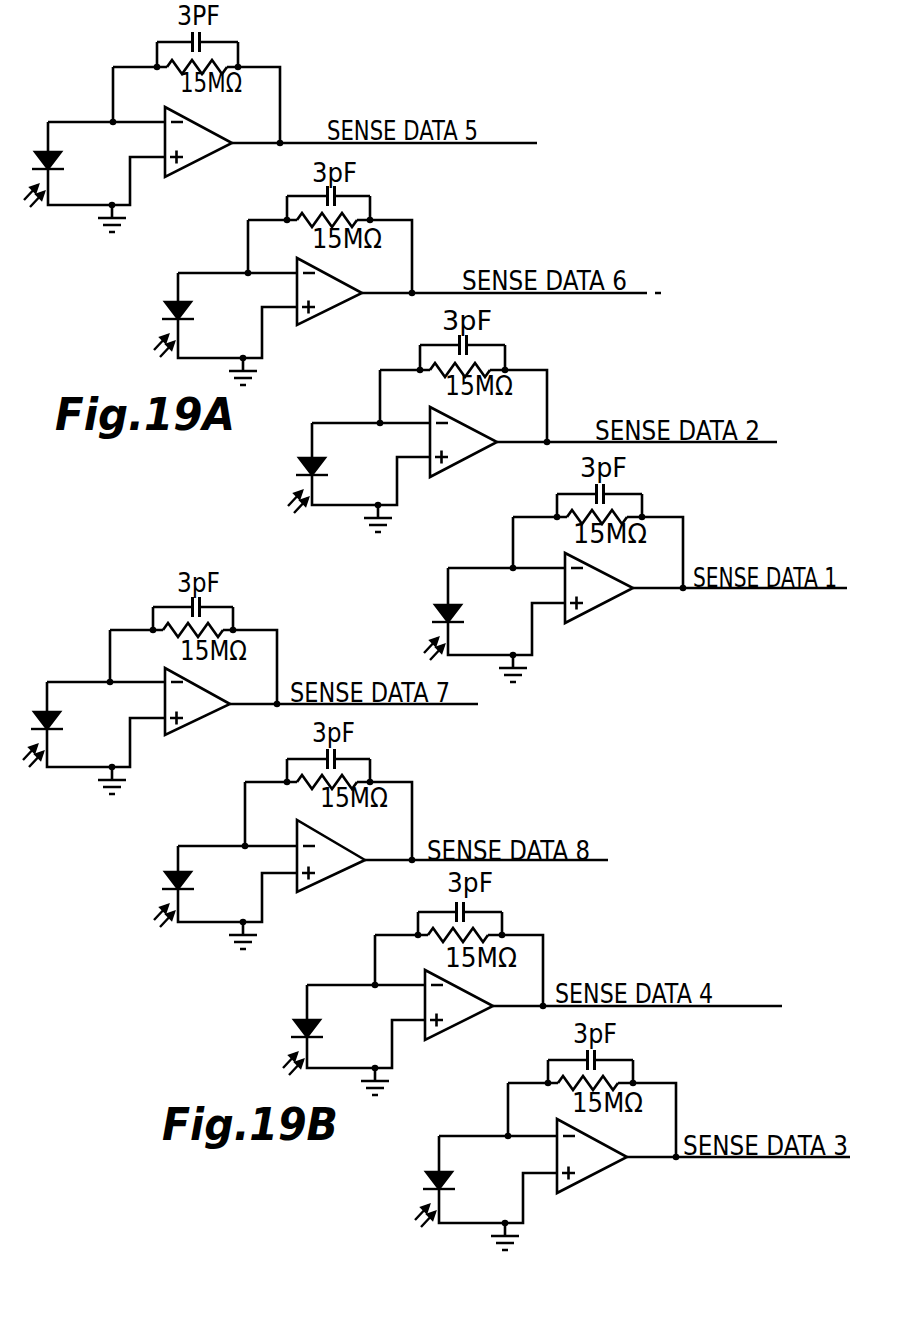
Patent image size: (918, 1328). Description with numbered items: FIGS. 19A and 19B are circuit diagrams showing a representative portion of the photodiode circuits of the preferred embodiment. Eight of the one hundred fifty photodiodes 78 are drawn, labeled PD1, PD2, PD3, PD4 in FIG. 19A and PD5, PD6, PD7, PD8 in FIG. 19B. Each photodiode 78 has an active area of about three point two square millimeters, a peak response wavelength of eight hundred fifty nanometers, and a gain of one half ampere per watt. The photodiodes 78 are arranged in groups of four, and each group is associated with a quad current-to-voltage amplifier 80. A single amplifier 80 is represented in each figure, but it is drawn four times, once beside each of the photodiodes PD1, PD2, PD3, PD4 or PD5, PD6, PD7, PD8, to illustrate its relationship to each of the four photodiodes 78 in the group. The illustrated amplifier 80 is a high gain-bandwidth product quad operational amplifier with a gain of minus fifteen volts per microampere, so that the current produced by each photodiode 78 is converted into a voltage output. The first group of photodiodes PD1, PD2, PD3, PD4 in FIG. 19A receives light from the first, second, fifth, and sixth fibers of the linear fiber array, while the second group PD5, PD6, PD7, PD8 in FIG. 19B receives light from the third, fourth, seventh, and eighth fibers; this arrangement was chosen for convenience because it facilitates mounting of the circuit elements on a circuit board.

In FIG. 19A, the photodiode 78 is at (269, 365).
In FIG. 19B, the photodiode 78 is at (266, 923).
In FIG. 19A, the quad current-to-voltage amplifier 80 is at (205, 128).
In FIG. 19B, the quad current-to-voltage amplifier 80 is at (165, 735).
In FIG. 19A, the photodiode PD1 is at (67, 172).
In FIG. 19A, the photodiode PD2 is at (199, 328).
In FIG. 19A, the photodiode PD3 is at (336, 471).
In FIG. 19A, the photodiode PD4 is at (469, 619).
In FIG. 19B, the photodiode PD5 is at (69, 730).
In FIG. 19B, the photodiode PD6 is at (199, 888).
In FIG. 19B, the photodiode PD7 is at (329, 1034).
In FIG. 19B, the photodiode PD8 is at (462, 1186).